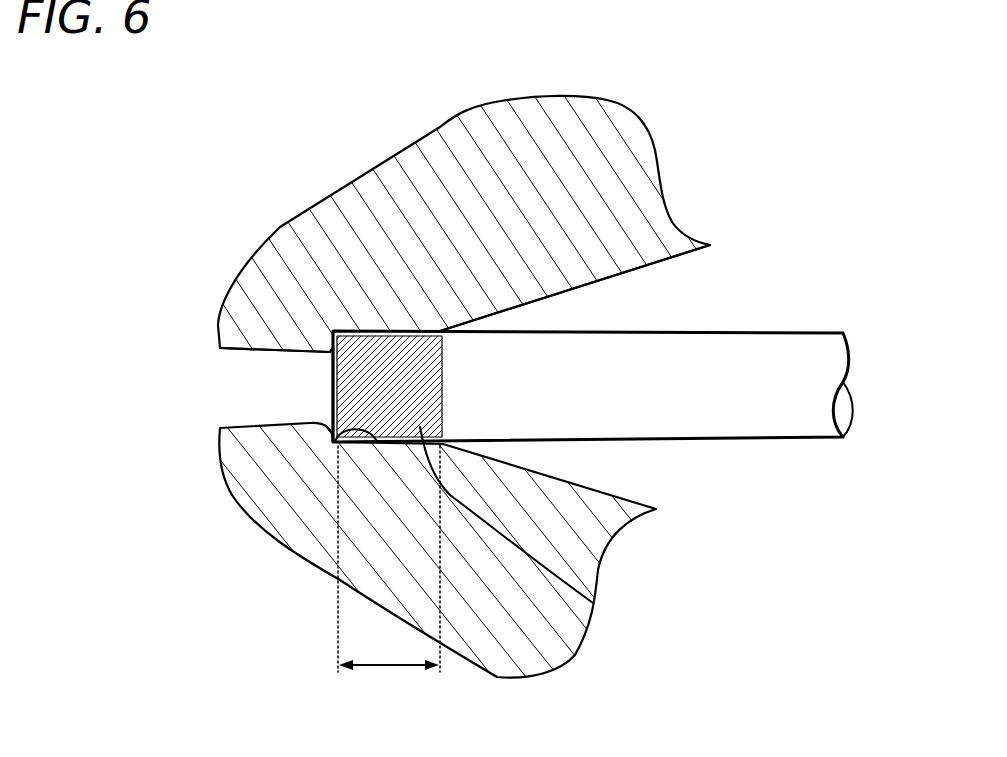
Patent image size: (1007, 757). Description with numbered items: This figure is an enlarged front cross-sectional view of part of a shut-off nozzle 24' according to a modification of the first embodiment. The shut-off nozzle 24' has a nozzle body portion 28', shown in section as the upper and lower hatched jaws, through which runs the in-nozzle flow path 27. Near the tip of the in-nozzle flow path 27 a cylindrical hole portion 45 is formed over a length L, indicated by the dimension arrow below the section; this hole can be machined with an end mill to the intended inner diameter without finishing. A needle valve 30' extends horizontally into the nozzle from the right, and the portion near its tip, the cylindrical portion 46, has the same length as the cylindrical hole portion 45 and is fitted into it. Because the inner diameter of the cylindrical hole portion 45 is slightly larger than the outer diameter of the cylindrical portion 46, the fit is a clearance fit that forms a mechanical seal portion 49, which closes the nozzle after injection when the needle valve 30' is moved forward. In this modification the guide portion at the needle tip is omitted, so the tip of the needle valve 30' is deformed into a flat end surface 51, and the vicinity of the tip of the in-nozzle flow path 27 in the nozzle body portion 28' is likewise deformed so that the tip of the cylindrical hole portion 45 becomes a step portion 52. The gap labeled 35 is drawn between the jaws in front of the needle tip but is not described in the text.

The shut-off nozzle 24' is at (188, 79).
The nozzle body portion 28' is at (433, 223).
The in-nozzle flow path 27 is at (633, 468).
The needle valve 30' is at (608, 325).
The cylindrical portion 46 is at (390, 331).
The step portion 52 is at (333, 344).
The gap 35 is at (213, 383).
The flat end surface 51 is at (333, 392).
The cylindrical hole portion 45 is at (333, 430).
The mechanical seal portion 49 is at (593, 603).
The length L is at (389, 569).